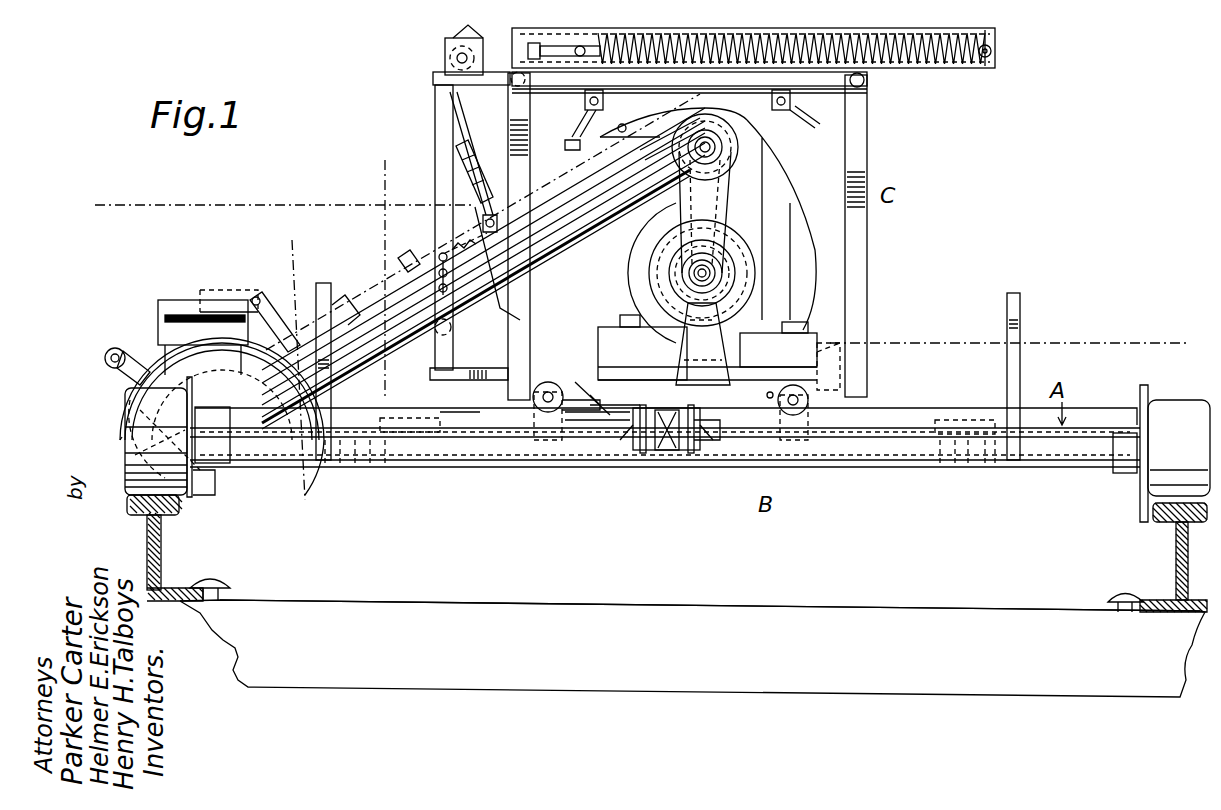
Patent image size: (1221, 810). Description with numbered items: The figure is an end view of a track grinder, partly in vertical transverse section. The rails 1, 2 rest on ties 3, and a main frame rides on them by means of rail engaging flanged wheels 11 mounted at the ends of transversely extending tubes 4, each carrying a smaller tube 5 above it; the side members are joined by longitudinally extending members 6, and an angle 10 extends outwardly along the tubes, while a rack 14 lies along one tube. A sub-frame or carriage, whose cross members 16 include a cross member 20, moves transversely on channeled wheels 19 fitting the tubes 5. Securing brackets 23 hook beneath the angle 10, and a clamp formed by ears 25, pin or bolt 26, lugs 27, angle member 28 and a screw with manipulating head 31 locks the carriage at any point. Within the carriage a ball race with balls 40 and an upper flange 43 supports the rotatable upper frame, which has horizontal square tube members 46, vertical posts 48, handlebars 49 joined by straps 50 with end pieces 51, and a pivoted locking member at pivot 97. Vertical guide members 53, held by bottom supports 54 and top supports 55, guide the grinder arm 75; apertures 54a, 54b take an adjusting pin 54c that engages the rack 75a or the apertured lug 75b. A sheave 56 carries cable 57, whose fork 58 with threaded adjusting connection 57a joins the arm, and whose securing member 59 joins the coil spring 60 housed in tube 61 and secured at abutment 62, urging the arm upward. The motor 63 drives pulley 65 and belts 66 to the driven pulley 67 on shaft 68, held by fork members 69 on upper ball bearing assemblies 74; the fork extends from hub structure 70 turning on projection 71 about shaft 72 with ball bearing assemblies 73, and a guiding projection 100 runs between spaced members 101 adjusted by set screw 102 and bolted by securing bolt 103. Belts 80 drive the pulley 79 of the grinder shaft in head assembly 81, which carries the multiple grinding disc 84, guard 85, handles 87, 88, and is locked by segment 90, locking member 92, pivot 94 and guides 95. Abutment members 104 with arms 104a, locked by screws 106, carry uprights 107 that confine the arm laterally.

The rail 1 is at (160, 543).
The rail 2 is at (1175, 565).
The ties 3 is at (812, 628).
The transversely extending tubes 4 is at (708, 318).
The smaller tube 5 is at (453, 418).
The longitudinally extending members 6 is at (362, 465).
The angle 10 is at (284, 244).
The rail engaging flanged wheel 11 is at (193, 498).
The rack 14 is at (377, 167).
The cross members 16 is at (99, 214).
The channeled wheels 19 is at (553, 392).
The cross member 20 is at (593, 440).
The securing brackets 23 is at (548, 440).
The ears 25 is at (640, 448).
The pin or bolt 26 is at (684, 420).
The ears or lugs 27 is at (645, 455).
The angle member 28 is at (690, 452).
The manipulating head 31 is at (668, 452).
The balls 40 is at (566, 440).
The upper flange 43 is at (612, 402).
The horizontal square tube members 46 is at (585, 400).
The vertical posts 48 is at (530, 162).
The handlebars or tubes 49 is at (512, 84).
The straps 50 is at (512, 94).
The connecting end pieces 51 is at (810, 75).
The vertical guide members 53 is at (435, 106).
The bottom supports 54 is at (482, 352).
The aperture 54a is at (430, 228).
The aperture 54b is at (439, 256).
The adjusting pin 54c is at (388, 243).
The top supports 55 is at (433, 79).
The sheave 56 is at (445, 56).
The supporting cable 57 is at (458, 120).
The screw threaded adjusting connection 57a is at (482, 165).
The supporting fork 58 is at (495, 203).
The securing member 59 is at (586, 46).
The coil spring 60 is at (642, 40).
The tube 61 is at (996, 42).
The spring abutment 62 is at (996, 55).
The motor 63 is at (775, 218).
The drive pulley 65 is at (650, 287).
The belts 66 is at (665, 236).
The driven pulley 67 is at (662, 132).
The shaft 68 is at (738, 145).
The fork members 69 is at (725, 212).
The hub structure 70 is at (714, 282).
The projection 71 is at (722, 338).
The shaft 72 is at (713, 272).
The ball bearing assemblies 73 is at (716, 262).
The upper ball bearing assemblies 74 is at (715, 150).
The grinder arm 75 is at (568, 252).
The rack 75a is at (398, 262).
The apertured lug 75b is at (451, 330).
The pulley 79 is at (215, 480).
The belts 80 is at (640, 152).
The head assembly 81 is at (145, 412).
The multiple grinding disc 84 is at (162, 377).
The guard 85 is at (140, 386).
The handle 87 is at (105, 357).
The handle 88 is at (176, 300).
The segment 90 is at (248, 330).
The locking member 92 is at (225, 295).
The pivot 94 is at (340, 305).
The lateral guides 95 is at (262, 298).
The pivot 97 is at (775, 392).
The projection 100 is at (660, 122).
The spaced members 101 is at (575, 142).
The set screw or adjusting member 102 is at (580, 118).
The securing bolt 103 is at (588, 102).
The abutment member 104 is at (332, 465).
The arm 104a is at (412, 412).
The screw 106 is at (384, 465).
The uprights 107 is at (323, 283).